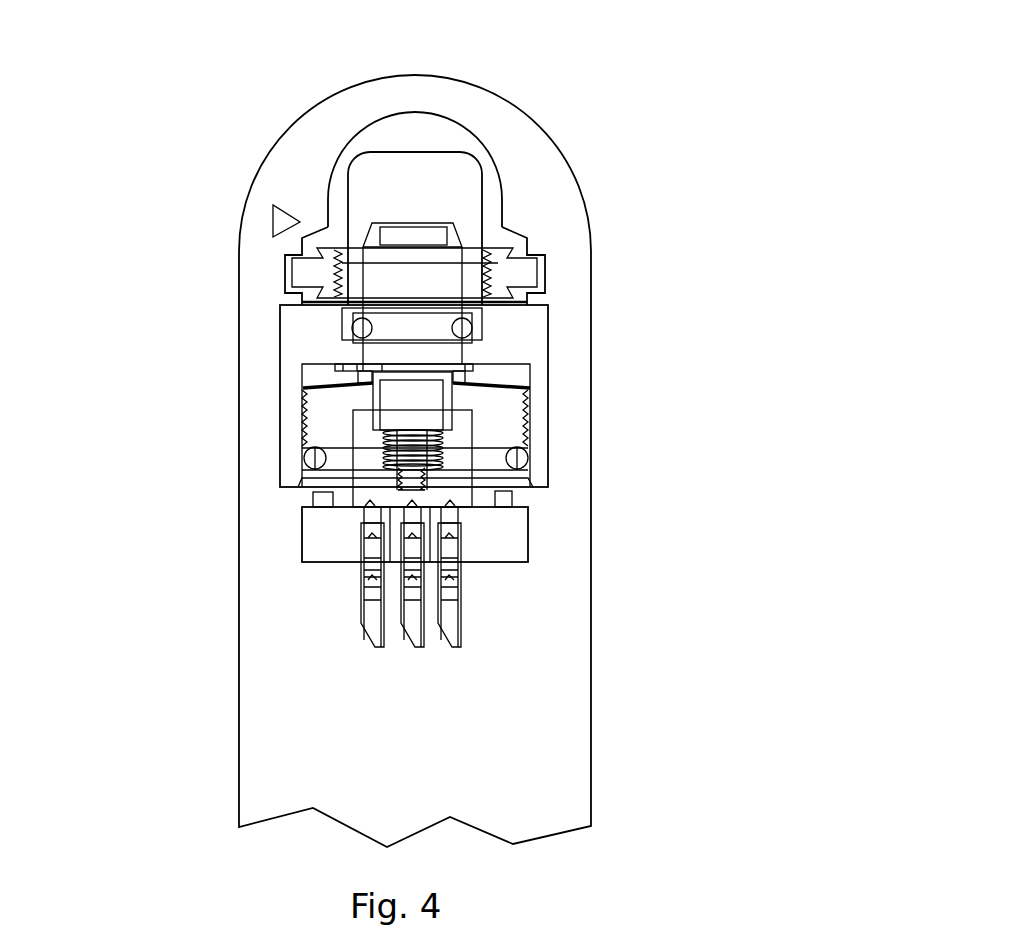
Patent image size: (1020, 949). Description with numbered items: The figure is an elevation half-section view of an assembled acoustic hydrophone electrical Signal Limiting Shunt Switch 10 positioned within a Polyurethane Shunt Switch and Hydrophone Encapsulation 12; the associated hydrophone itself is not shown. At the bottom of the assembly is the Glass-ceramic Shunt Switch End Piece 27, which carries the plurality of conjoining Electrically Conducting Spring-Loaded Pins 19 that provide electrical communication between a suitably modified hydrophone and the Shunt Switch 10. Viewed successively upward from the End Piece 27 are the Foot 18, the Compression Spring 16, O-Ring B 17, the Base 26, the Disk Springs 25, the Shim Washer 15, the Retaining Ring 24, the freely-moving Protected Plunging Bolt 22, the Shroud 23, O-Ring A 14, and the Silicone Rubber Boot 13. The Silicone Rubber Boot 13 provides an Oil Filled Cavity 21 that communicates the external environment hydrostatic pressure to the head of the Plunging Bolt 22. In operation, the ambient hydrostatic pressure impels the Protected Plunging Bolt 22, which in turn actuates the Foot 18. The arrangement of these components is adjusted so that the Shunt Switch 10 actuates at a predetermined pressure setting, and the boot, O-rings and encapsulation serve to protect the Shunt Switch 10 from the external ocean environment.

The Signal Limiting Shunt Switch 10 is at (272, 217).
The Polyurethane Shunt Switch and Hydrophone Encapsulation 12 is at (407, 73).
The Silicone Rubber Boot 13 is at (488, 145).
The O-Ring A 14 is at (473, 328).
The Shim Washer 15 is at (360, 383).
The Compression Spring 16 is at (453, 445).
The O-Ring B 17 is at (518, 457).
The Foot 18 is at (360, 489).
The Electrically Conducting Spring-Loaded Pins 19 is at (463, 638).
The Oil Filled Cavity 21 is at (392, 205).
The Protected Plunging Bolt 22 is at (462, 232).
The Shroud 23 is at (278, 440).
The Retaining Ring 24 is at (337, 368).
The Disk Springs 25 is at (320, 389).
The Base 26 is at (528, 493).
The Glass-ceramic Shunt Switch End Piece 27 is at (300, 552).